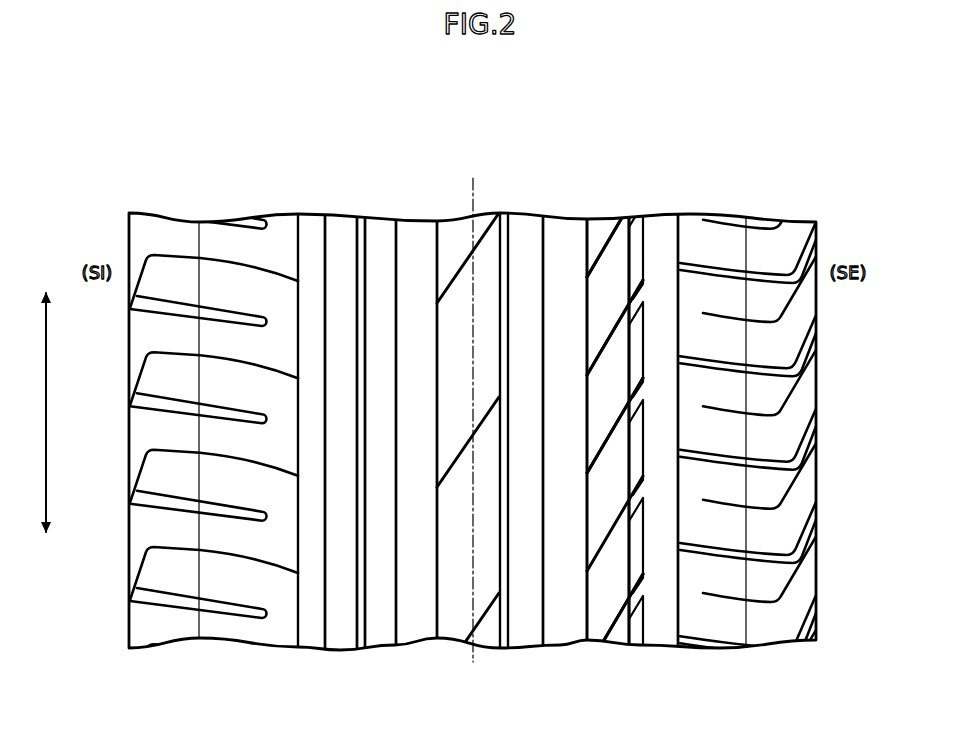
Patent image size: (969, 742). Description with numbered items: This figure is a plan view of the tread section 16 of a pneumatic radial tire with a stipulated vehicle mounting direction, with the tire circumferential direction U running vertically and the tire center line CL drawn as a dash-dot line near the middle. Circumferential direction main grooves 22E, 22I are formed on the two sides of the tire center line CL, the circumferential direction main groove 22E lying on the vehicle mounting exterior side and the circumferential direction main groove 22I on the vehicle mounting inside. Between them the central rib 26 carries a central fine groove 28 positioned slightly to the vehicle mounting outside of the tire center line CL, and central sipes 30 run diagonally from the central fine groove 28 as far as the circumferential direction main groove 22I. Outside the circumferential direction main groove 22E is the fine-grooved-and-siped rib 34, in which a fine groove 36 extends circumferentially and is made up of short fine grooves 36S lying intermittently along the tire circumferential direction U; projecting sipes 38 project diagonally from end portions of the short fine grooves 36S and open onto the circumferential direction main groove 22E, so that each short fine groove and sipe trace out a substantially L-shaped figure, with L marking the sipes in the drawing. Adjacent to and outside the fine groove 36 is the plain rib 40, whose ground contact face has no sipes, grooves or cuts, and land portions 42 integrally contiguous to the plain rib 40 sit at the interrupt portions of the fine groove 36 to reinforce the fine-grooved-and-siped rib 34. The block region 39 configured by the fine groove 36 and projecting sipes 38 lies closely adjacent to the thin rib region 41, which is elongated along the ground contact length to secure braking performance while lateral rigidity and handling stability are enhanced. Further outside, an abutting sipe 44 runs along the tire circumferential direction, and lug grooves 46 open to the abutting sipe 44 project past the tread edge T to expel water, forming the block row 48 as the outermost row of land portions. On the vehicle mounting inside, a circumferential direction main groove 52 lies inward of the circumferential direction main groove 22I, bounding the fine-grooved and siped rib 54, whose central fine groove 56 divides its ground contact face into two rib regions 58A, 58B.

The tread section 16 is at (686, 118).
The circumferential direction main groove 22I is at (417, 641).
The circumferential direction main groove 22E is at (563, 639).
The central rib 26 is at (499, 439).
The central fine groove 28 is at (503, 213).
The central sipes 30 is at (452, 282).
The fine-grooved-and-siped rib 34 is at (631, 415).
The fine groove 36 is at (636, 214).
The short fine grooves 36S is at (640, 237).
The projecting sipes 38 is at (602, 251).
The block region 39 is at (625, 206).
The plain rib 40 is at (670, 419).
The thin rib region 41 is at (643, 211).
The land portions 42 is at (630, 324).
The abutting sipe 44 is at (683, 291).
The lug grooves 46 is at (703, 359).
The block row (shoulder block row) 48 is at (748, 414).
The circumferential direction main groove 52 is at (311, 643).
The fine-grooved and siped rib 54 is at (358, 425).
The fine groove 56 is at (358, 217).
The rib region 58A is at (337, 220).
The rib region 58B is at (378, 226).
The tread edge T is at (199, 240).
The tire center line CL is at (477, 183).
The tire circumferential direction U is at (49, 398).
The sipe length direction L is at (596, 289).